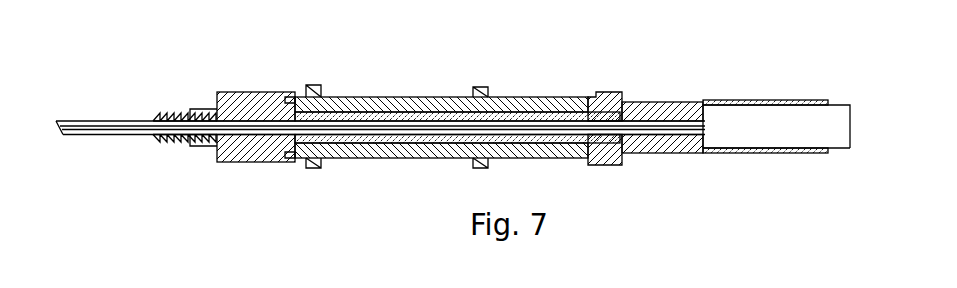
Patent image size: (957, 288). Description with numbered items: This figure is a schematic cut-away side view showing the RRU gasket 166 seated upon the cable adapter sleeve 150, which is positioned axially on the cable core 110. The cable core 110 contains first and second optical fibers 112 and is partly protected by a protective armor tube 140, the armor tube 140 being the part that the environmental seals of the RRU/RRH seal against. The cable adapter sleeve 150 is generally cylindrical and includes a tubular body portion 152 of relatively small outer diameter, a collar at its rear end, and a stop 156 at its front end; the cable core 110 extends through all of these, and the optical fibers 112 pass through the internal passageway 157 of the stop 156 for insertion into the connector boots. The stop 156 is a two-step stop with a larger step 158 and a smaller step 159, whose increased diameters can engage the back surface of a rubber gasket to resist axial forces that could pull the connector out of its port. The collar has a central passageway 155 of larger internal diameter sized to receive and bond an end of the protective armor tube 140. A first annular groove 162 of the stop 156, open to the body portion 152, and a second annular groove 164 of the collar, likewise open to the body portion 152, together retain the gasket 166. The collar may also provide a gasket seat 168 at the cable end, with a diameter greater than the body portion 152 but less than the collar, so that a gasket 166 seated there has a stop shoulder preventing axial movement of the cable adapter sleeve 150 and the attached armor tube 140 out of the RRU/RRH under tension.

The cable core 110 is at (127, 121).
The optical fiber 112 is at (110, 128).
The internal passageway 157 is at (360, 127).
The smaller step 159 is at (203, 117).
The larger step 158 is at (238, 92).
The stop 156 is at (252, 93).
The body portion 152 is at (546, 113).
The first annular groove 162 is at (287, 100).
The gasket 166 is at (482, 88).
The second annular groove 164 is at (590, 105).
The cable adapter sleeve 150 is at (636, 102).
The gasket seat 168 is at (699, 102).
The protective armor tube 140 is at (772, 123).
The central passageway 155 is at (738, 130).